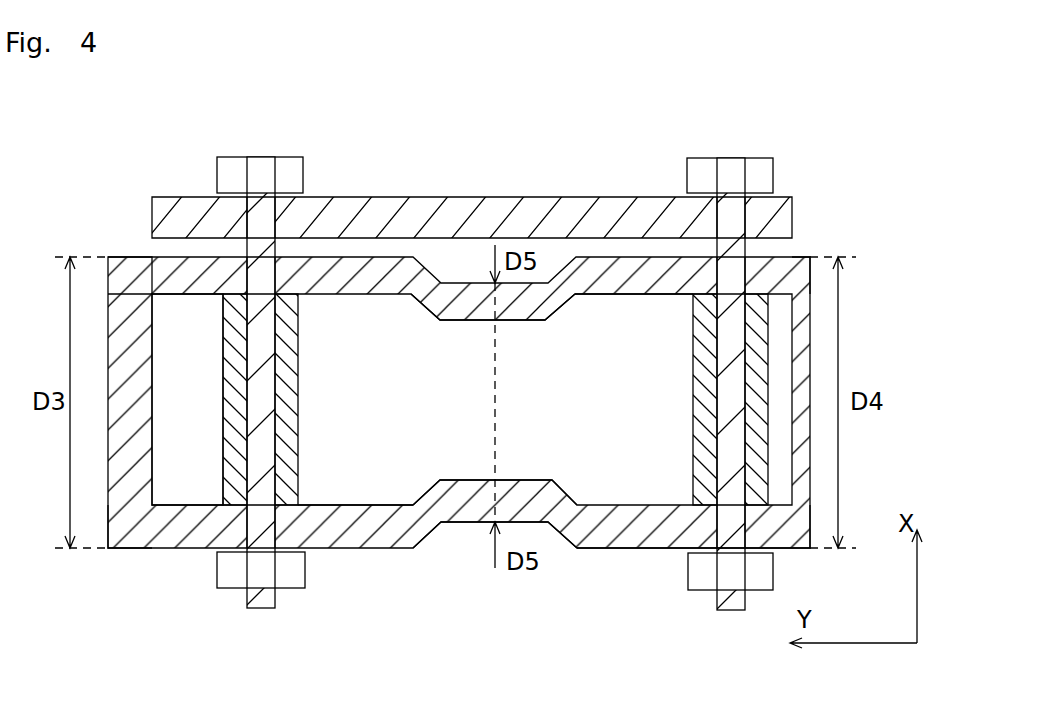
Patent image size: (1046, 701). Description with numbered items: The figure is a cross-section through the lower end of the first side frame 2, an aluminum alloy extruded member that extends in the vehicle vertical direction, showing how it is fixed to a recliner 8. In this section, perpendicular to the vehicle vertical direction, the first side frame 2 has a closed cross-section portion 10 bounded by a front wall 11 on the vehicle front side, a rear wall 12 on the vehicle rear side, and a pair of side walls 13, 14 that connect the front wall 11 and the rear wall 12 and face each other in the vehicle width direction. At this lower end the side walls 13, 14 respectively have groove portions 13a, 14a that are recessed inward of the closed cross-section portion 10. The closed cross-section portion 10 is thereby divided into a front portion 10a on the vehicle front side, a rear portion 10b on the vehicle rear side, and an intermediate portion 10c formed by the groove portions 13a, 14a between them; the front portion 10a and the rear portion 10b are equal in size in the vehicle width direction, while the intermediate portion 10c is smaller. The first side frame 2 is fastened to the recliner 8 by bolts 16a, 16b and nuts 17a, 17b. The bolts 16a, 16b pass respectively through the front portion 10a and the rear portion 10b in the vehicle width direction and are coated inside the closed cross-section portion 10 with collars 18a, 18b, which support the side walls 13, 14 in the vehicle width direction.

The first side frame 2 is at (113, 228).
The recliner 8 is at (490, 198).
The closed cross-section portion 10 is at (362, 572).
The front portion 10a is at (130, 548).
The rear portion 10b is at (647, 548).
The intermediate portion 10c is at (552, 535).
The front wall 11 is at (153, 323).
The rear wall 12 is at (813, 258).
The side wall 13 is at (339, 505).
The groove portion 13a is at (433, 480).
The side wall 14 is at (625, 295).
The groove portion 14a is at (545, 321).
The bolt 16a is at (272, 157).
The bolt 16b is at (742, 158).
The nut 17a is at (218, 563).
The nut 17b is at (773, 572).
The collar 18a is at (299, 333).
The collar 18b is at (693, 452).